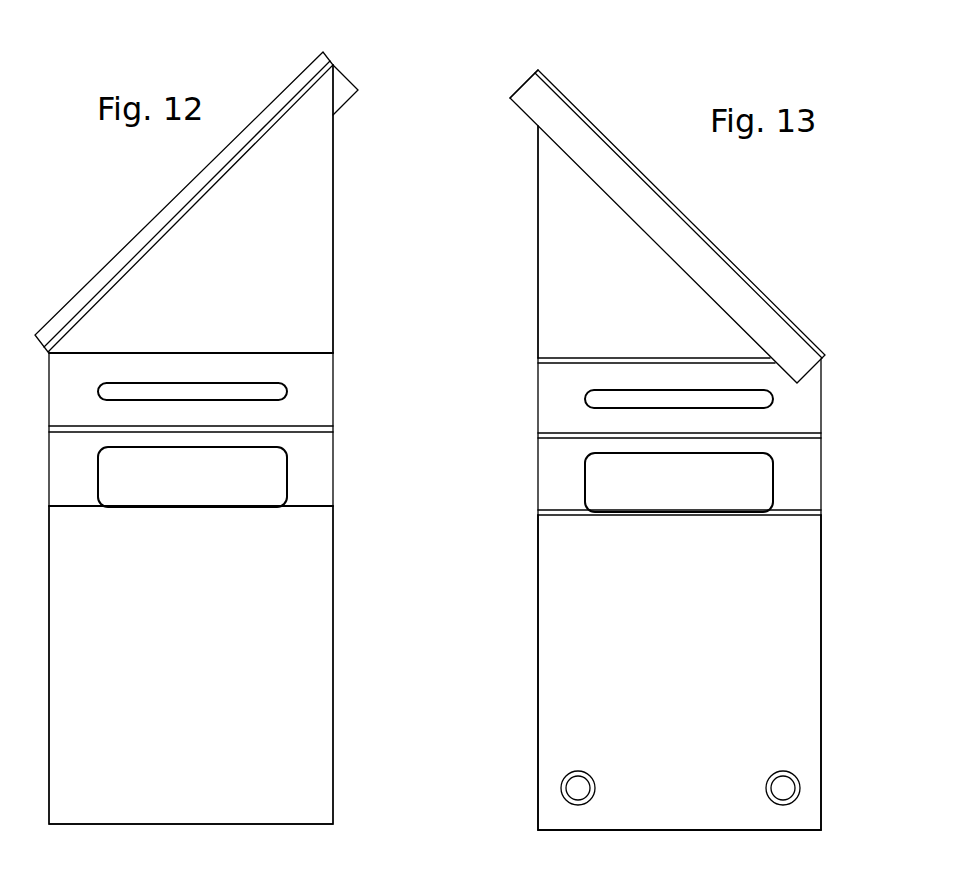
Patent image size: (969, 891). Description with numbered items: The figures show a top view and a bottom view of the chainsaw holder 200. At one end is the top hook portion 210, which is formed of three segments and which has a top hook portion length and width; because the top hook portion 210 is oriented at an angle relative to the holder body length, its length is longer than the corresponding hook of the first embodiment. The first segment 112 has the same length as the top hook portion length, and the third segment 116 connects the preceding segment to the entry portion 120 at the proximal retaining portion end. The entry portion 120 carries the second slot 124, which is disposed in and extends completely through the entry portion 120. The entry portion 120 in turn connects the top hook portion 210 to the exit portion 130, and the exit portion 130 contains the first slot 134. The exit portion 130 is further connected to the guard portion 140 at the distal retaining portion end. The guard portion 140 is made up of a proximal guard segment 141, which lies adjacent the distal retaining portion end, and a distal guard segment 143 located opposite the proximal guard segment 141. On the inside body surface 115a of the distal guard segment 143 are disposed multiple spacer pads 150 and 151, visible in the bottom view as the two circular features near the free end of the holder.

In FIG. 12, the chainsaw holder 200 is at (117, 227).
In FIG. 13, the chainsaw holder 200 is at (713, 222).
In FIG. 12, the top hook portion 210 is at (415, 72).
In FIG. 13, the top hook portion 210 is at (522, 86).
In FIG. 12, the first segment 112 is at (355, 99).
In FIG. 13, the first segment 112 is at (513, 100).
In FIG. 12, the third segment 116 is at (293, 237).
In FIG. 13, the third segment 116 is at (565, 225).
In FIG. 12, the entry portion 120 is at (322, 372).
In FIG. 13, the entry portion 120 is at (553, 373).
In FIG. 12, the second slot 124 is at (247, 393).
In FIG. 13, the second slot 124 is at (603, 398).
In FIG. 12, the exit portion 130 is at (315, 458).
In FIG. 13, the exit portion 130 is at (547, 460).
In FIG. 12, the first slot 134 is at (263, 488).
In FIG. 13, the first slot 134 is at (613, 482).
In FIG. 12, the guard portion 140 is at (312, 691).
In FIG. 13, the guard portion 140 is at (577, 667).
In FIG. 13, the proximal guard segment 141 is at (578, 572).
In FIG. 13, the distal guard segment 143 is at (553, 778).
In FIG. 13, the spacer pad 150 is at (773, 770).
In FIG. 13, the spacer pad 151 is at (585, 772).
In FIG. 13, the side edge 115a is at (788, 608).